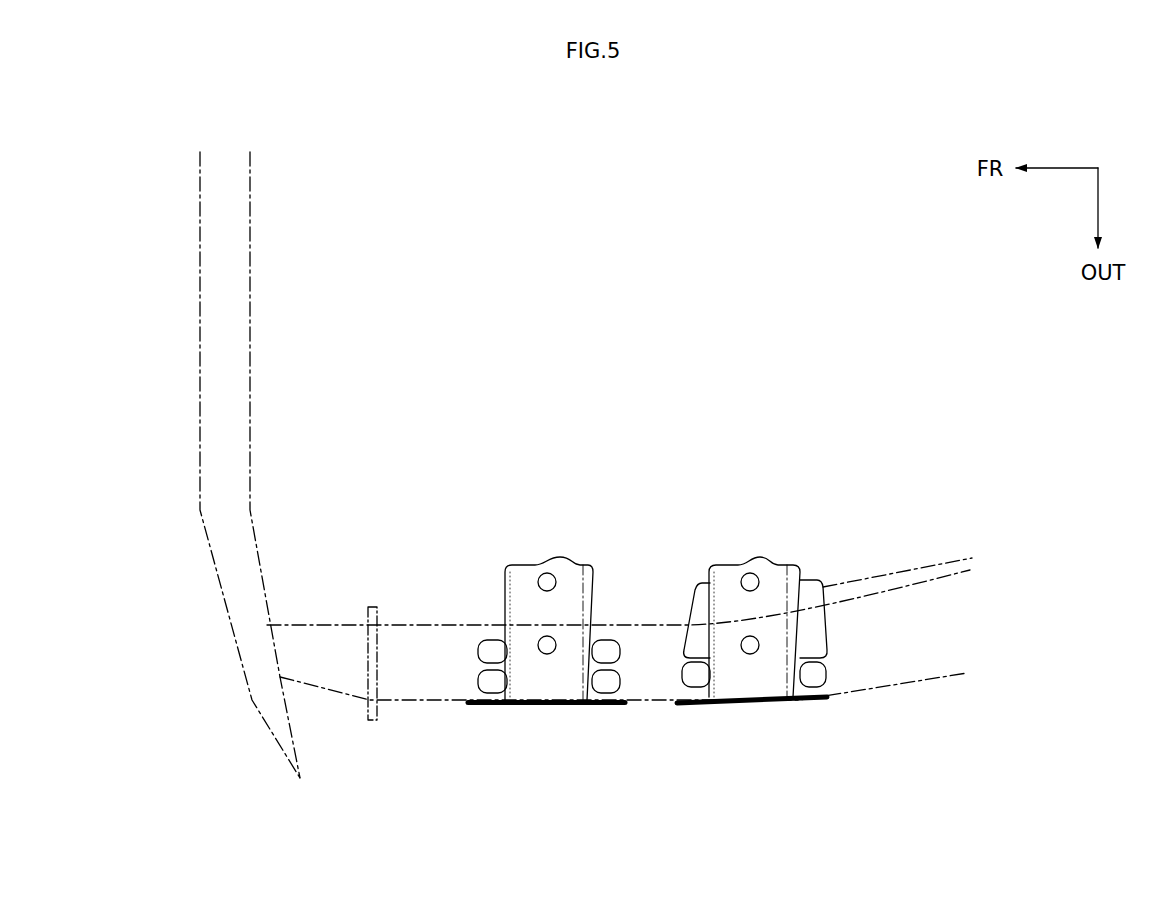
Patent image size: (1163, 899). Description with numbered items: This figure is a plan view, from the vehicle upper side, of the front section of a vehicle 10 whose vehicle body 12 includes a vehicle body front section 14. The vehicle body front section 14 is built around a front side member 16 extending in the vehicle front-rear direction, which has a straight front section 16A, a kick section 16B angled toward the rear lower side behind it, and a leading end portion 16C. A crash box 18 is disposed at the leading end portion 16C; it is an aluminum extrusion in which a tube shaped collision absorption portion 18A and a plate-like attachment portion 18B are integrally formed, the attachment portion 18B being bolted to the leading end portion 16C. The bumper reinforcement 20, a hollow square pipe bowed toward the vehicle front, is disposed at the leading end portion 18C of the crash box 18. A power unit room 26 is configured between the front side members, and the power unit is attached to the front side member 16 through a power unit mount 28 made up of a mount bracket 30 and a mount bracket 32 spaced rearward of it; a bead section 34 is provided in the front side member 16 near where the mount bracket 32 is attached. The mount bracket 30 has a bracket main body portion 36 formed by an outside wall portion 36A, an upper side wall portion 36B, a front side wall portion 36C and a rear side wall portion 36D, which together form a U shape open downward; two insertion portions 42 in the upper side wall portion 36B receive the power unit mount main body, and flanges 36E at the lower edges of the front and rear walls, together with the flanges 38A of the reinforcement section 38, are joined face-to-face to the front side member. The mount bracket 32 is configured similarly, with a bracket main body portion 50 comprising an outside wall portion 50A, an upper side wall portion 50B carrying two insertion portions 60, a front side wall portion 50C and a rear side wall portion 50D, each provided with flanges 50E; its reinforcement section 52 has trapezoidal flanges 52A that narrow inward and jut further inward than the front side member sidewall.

The vehicle 10 is at (148, 181).
The vehicle body 12 is at (449, 196).
The vehicle body front section 14 is at (489, 250).
The front side member 16 is at (955, 553).
The front section 16A is at (447, 640).
The kick section 16B is at (950, 612).
The leading end portion 16C is at (392, 640).
The crash box 18 is at (348, 700).
The collision absorption portion 18A is at (328, 643).
The attachment portion 18B is at (375, 719).
The leading end portion 18C is at (217, 497).
The bumper reinforcement 20 is at (193, 415).
The power unit room 26 is at (603, 276).
The power unit mount 28 is at (652, 430).
The mount bracket 30 is at (555, 527).
The mount bracket 32 is at (752, 503).
The bead section 34 is at (858, 580).
The bracket main body portion 36 is at (597, 573).
The outside wall portion 36A is at (577, 707).
The upper side wall portion 36B is at (593, 707).
The front side wall portion 36C is at (507, 597).
The rear side wall portion 36D is at (597, 607).
The flange 36E is at (493, 687).
The reinforcement section 38 is at (563, 726).
The flange 38A is at (473, 657).
The insertion portion 42 is at (545, 639).
The bracket main body portion 50 is at (783, 562).
The outside wall portion 50A is at (793, 707).
The upper side wall portion 50B is at (760, 677).
The front side wall portion 50C is at (773, 692).
The rear side wall portion 50D is at (810, 676).
The flange 50E is at (718, 687).
The reinforcement section 52 is at (885, 709).
The flange 52A is at (810, 627).
The insertion portion 60 is at (748, 639).